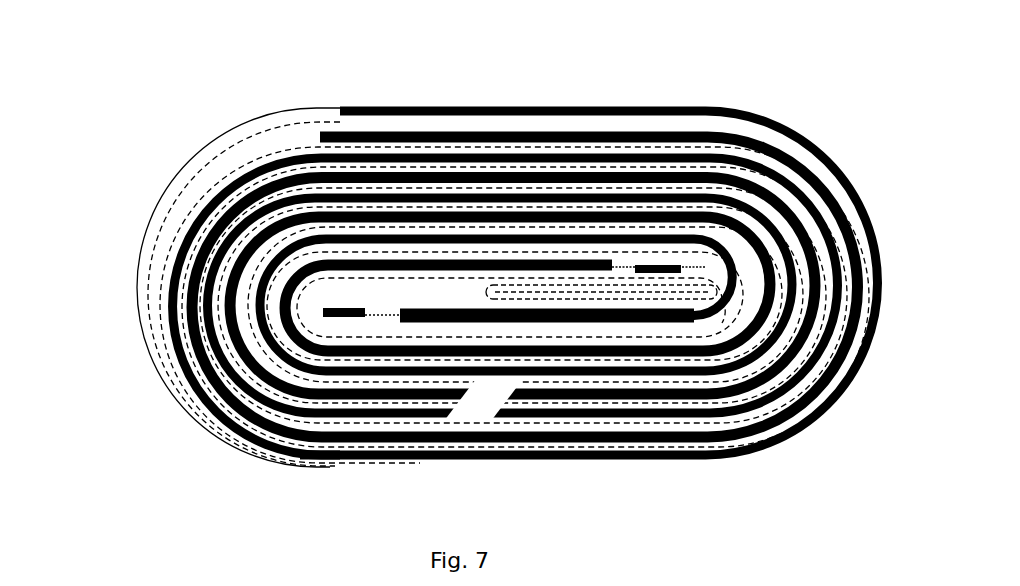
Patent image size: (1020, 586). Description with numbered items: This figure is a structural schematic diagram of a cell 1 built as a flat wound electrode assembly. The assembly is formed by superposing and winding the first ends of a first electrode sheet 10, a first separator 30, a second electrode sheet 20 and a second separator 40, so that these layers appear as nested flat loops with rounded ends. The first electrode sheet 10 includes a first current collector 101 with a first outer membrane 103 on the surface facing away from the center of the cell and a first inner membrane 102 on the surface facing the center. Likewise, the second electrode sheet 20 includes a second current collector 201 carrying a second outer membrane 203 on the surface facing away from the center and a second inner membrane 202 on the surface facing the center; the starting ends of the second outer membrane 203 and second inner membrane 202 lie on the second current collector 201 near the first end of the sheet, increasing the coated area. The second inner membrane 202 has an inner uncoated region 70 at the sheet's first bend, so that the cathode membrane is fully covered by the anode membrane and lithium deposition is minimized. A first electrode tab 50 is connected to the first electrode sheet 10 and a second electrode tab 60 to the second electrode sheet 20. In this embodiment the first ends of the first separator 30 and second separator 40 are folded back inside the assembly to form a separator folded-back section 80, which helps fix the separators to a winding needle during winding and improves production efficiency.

The cell 1 is at (130, 260).
The first electrode sheet 10 is at (699, 152).
The first current collector 101 is at (590, 270).
The first inner membrane 102 is at (700, 267).
The first outer membrane 103 is at (527, 278).
The second electrode sheet 20 is at (396, 415).
The second current collector 201 is at (420, 320).
The second inner membrane 202 is at (398, 312).
The second outer membrane 203 is at (440, 328).
The first separator 30 is at (420, 253).
The second separator 40 is at (430, 255).
The first electrode tab 50 is at (808, 148).
The second electrode tab 60 is at (325, 318).
The inner uncoated region 70 is at (733, 280).
The separator folded-back section 80 is at (640, 347).